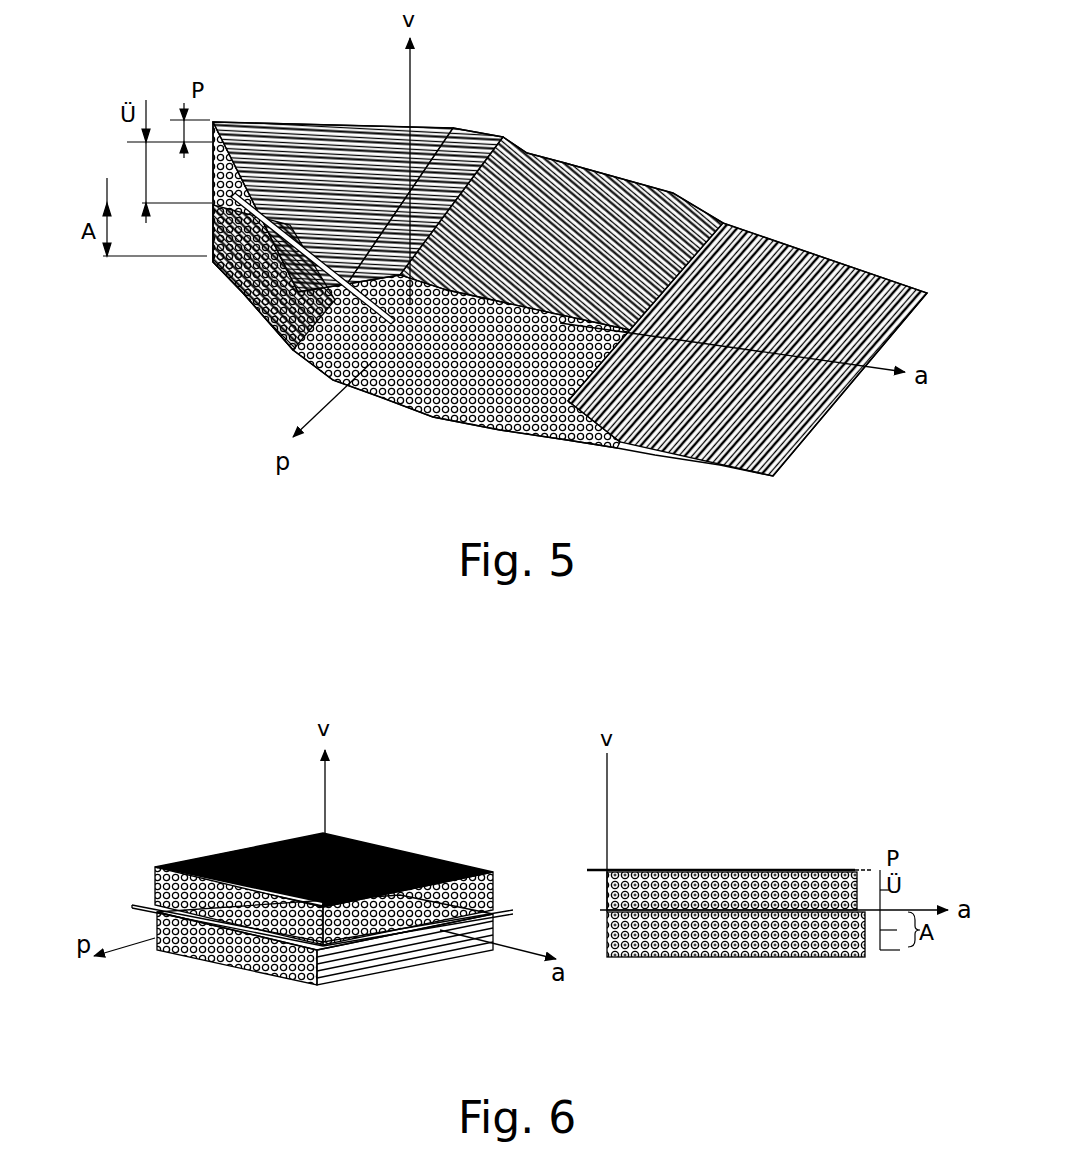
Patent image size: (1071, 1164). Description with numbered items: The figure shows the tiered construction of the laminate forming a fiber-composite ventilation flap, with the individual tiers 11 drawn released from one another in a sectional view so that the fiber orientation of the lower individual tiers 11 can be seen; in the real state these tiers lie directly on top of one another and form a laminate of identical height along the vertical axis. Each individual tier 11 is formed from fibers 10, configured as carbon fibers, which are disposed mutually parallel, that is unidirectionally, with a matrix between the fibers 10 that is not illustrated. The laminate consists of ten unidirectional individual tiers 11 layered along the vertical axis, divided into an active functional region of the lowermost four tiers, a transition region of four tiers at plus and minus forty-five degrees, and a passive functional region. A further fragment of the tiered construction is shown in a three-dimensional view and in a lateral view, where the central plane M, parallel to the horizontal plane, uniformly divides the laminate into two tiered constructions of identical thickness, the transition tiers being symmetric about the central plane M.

In FIG. 5, the fibers 10 is at (468, 140).
In FIG. 6, the fibers 10 is at (360, 977).
In FIG. 5, the individual tiers 11 is at (593, 299).
In FIG. 6, the central plane M is at (593, 905).